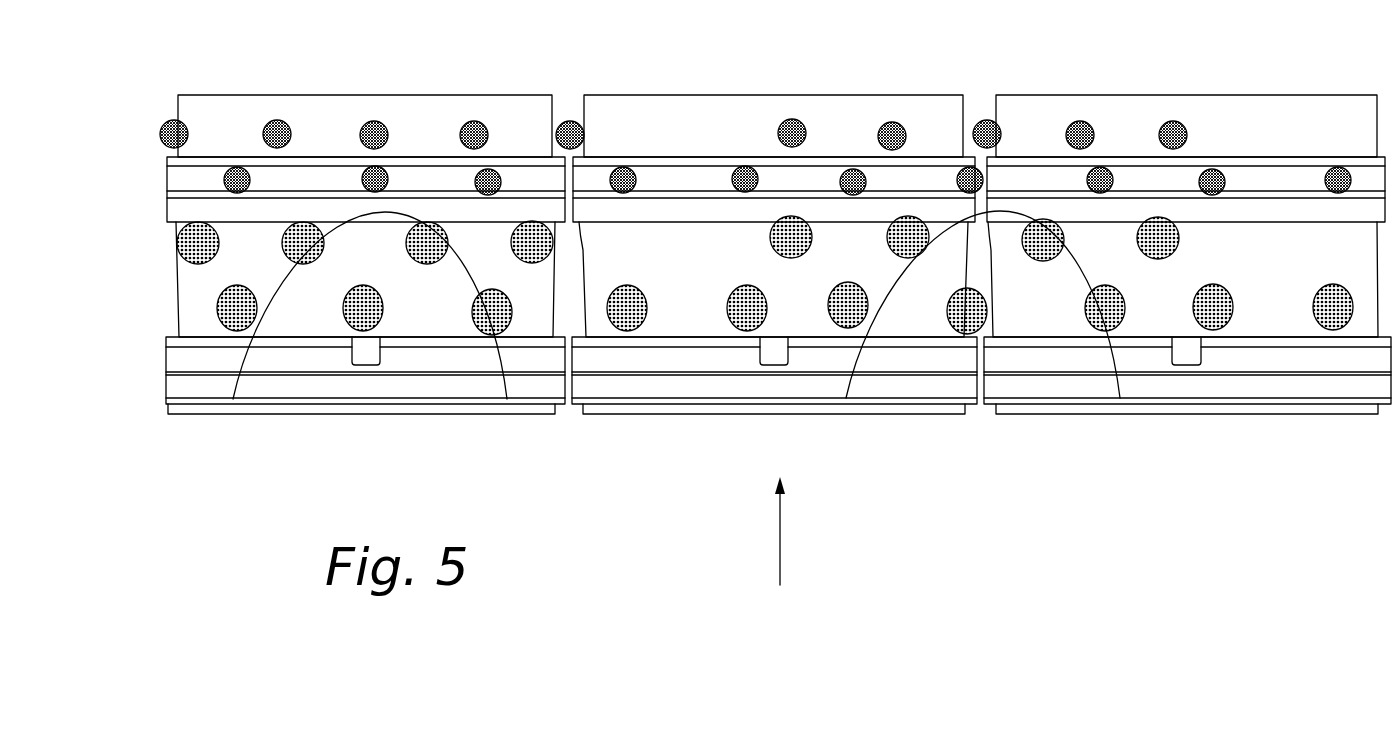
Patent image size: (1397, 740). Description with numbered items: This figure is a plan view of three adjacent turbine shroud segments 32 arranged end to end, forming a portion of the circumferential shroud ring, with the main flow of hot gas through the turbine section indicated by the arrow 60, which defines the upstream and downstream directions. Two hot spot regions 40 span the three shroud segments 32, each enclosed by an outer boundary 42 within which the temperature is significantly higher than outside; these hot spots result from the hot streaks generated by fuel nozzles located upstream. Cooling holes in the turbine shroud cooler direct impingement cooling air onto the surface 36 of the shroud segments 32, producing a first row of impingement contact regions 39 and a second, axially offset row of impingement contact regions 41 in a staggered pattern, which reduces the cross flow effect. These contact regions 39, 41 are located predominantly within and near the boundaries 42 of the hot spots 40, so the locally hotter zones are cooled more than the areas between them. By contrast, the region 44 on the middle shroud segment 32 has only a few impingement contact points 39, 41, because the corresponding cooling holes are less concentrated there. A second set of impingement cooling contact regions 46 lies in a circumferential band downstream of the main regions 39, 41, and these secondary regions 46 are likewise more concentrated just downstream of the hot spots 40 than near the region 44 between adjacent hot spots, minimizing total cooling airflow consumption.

The shroud segment 32 is at (372, 438).
The surface 36 is at (253, 245).
The first row of impingement contact regions 39 is at (212, 306).
The hot spot region 40 is at (317, 329).
The second row of impingement contact regions 41 is at (180, 251).
The outer boundary 42 is at (407, 218).
The region 44 is at (690, 266).
The secondary impingement cooling contact regions 46 is at (254, 111).
The arrows 60 is at (778, 527).